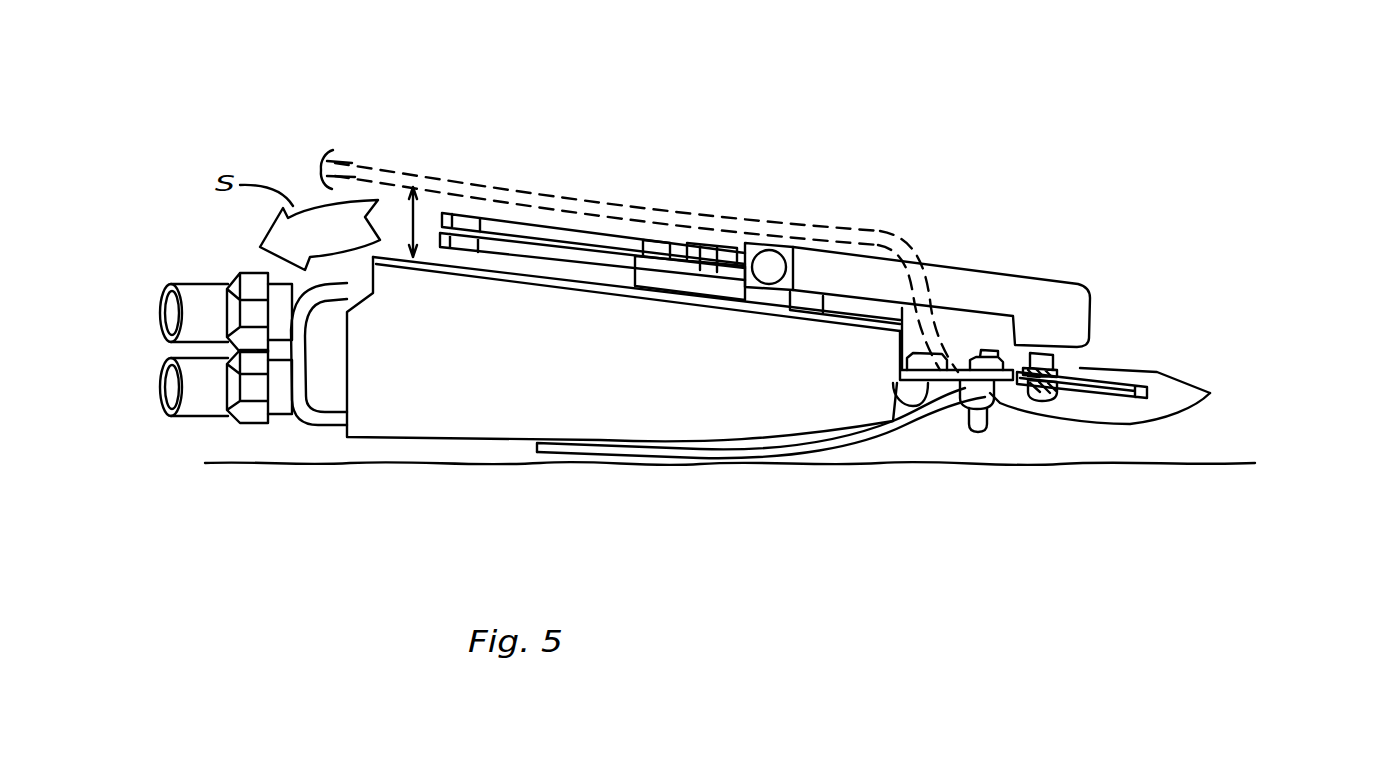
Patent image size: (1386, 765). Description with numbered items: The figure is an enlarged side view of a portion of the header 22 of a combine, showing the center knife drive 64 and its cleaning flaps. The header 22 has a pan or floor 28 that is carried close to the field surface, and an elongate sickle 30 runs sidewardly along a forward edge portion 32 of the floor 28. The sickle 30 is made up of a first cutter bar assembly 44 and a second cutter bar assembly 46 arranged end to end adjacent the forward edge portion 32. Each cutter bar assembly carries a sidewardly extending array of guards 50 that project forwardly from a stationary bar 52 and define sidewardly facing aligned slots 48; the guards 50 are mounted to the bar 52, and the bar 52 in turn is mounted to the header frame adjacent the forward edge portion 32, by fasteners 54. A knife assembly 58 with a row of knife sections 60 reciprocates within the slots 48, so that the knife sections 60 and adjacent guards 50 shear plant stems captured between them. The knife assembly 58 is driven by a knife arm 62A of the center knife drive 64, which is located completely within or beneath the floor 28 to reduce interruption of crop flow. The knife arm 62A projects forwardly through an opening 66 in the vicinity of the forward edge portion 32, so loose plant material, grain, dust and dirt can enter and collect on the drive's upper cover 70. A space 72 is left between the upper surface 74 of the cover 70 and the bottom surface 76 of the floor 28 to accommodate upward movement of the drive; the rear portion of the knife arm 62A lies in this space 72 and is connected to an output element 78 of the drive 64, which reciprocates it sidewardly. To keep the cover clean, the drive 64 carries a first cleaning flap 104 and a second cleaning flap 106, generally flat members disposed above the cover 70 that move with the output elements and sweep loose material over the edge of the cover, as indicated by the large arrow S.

The header 22 is at (1022, 130).
The floor 28 is at (398, 167).
The sickle 30 is at (1147, 387).
The forward edge portion 32 is at (968, 346).
The first cutter bar assembly 44 is at (1132, 404).
The second cutter bar assembly 46 is at (1132, 404).
The slots 48 is at (1157, 374).
The guards 50 is at (1163, 415).
The stationary bar 52 is at (990, 440).
The fasteners 54 is at (963, 427).
The knife assembly 58 is at (1105, 325).
The knife sections 60 is at (1040, 377).
The first knife arm 62A is at (993, 273).
The center knife drive 64 is at (413, 437).
The openings 66 is at (927, 272).
The upper cover 70 is at (592, 195).
The space 72 is at (414, 212).
The upper surface 74 is at (592, 209).
The bottom surface 76 is at (384, 178).
The first output element 78 is at (835, 253).
The first cleaning flap 104 is at (567, 212).
The second cleaning flap 106 is at (607, 258).